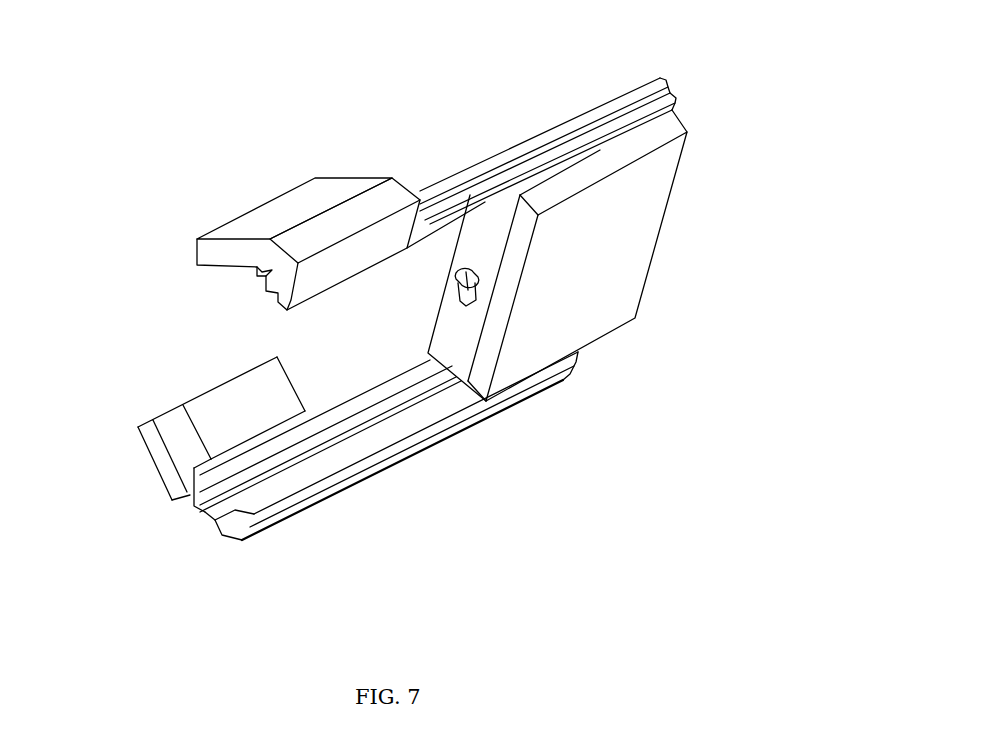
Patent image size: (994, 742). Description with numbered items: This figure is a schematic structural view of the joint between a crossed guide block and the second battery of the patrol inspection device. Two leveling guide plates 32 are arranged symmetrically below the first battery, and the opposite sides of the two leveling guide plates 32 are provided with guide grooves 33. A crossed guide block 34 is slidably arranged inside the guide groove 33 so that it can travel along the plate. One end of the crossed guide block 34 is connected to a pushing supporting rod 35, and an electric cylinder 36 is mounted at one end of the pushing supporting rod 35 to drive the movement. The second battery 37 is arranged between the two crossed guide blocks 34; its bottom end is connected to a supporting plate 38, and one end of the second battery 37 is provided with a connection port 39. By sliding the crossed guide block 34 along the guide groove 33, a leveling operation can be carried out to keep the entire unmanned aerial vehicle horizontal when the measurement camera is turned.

The leveling guide plate 32 is at (221, 400).
The guide groove 33 is at (151, 408).
The crossed guide block 34 is at (330, 501).
The pushing supporting rod 35 is at (204, 586).
The electric cylinder 36 is at (410, 498).
The second battery 37 is at (423, 180).
The supporting plate 38 is at (553, 222).
The connection port 39 is at (341, 204).